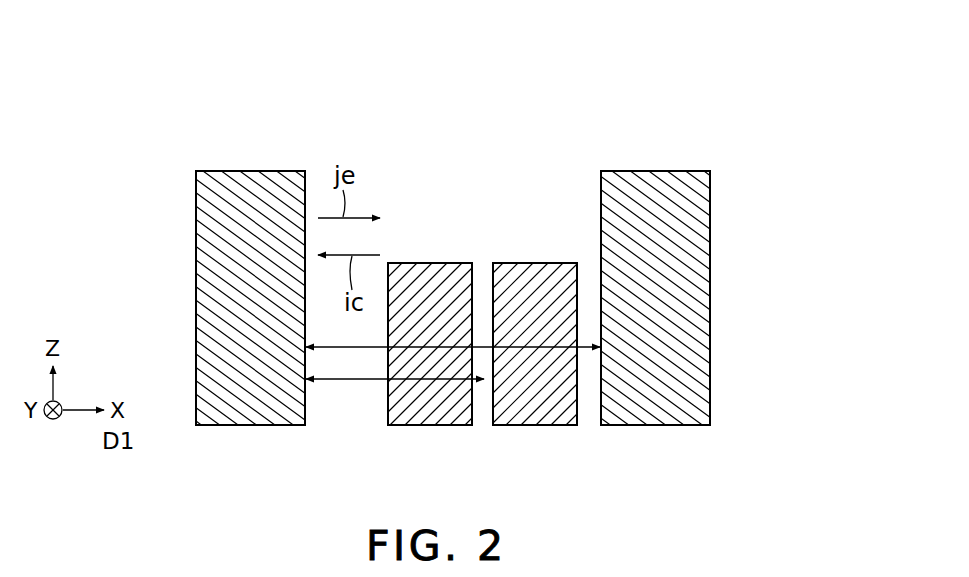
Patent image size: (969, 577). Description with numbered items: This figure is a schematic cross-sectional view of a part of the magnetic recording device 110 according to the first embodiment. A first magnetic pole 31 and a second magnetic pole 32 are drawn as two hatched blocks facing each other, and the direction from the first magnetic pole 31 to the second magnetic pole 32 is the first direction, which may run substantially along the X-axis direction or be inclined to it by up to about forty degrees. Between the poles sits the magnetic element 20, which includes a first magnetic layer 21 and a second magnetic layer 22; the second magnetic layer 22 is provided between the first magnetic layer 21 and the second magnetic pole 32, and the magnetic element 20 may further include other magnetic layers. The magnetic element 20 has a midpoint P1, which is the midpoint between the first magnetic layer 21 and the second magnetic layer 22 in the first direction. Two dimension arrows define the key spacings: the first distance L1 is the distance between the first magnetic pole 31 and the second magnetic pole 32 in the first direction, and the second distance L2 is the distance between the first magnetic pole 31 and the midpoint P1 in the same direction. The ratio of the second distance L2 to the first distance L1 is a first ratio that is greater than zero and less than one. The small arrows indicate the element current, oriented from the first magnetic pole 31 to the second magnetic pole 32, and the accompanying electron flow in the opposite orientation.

The magnetic element 20 is at (455, 258).
The first magnetic layer 21 is at (428, 280).
The second magnetic layer 22 is at (535, 281).
The first magnetic pole 31 is at (219, 346).
The second magnetic pole 32 is at (690, 345).
The magnetic recording device 110 is at (752, 208).
The first distance L1 is at (540, 349).
The second distance L2 is at (359, 381).
The midpoint P1 is at (482, 386).